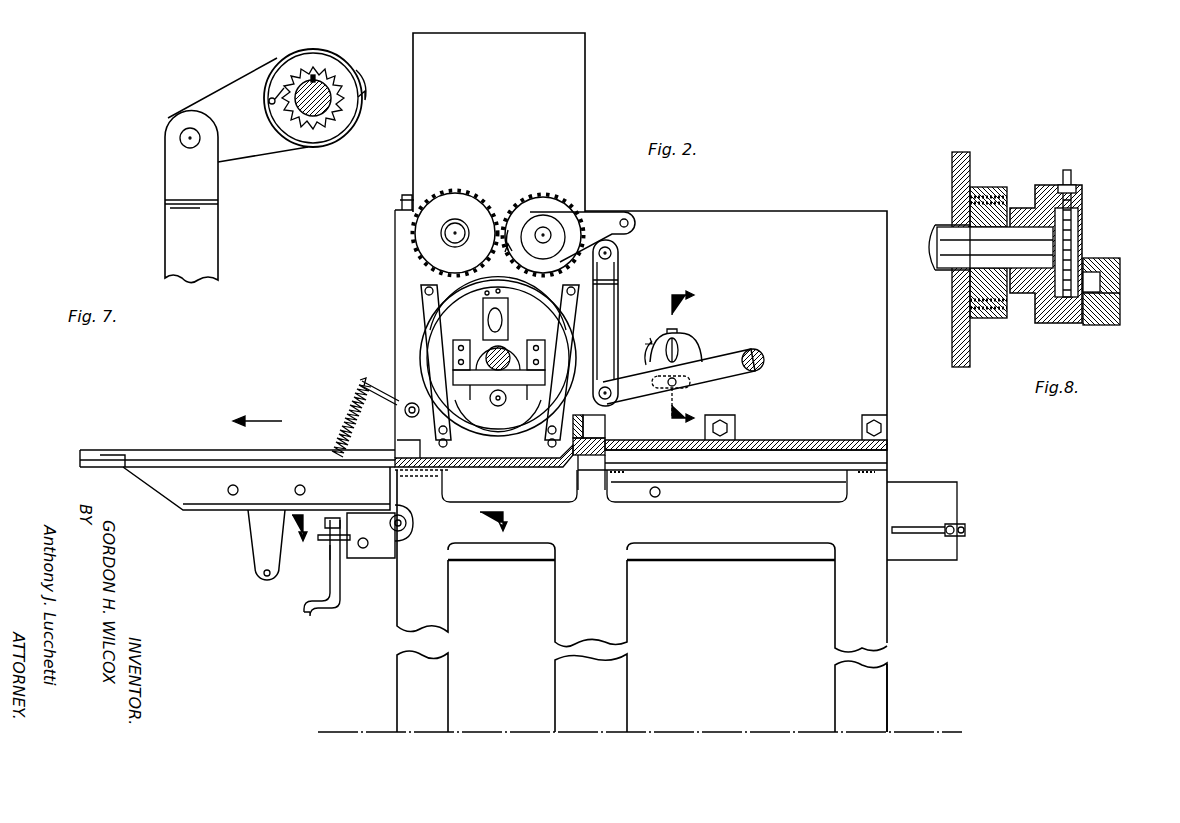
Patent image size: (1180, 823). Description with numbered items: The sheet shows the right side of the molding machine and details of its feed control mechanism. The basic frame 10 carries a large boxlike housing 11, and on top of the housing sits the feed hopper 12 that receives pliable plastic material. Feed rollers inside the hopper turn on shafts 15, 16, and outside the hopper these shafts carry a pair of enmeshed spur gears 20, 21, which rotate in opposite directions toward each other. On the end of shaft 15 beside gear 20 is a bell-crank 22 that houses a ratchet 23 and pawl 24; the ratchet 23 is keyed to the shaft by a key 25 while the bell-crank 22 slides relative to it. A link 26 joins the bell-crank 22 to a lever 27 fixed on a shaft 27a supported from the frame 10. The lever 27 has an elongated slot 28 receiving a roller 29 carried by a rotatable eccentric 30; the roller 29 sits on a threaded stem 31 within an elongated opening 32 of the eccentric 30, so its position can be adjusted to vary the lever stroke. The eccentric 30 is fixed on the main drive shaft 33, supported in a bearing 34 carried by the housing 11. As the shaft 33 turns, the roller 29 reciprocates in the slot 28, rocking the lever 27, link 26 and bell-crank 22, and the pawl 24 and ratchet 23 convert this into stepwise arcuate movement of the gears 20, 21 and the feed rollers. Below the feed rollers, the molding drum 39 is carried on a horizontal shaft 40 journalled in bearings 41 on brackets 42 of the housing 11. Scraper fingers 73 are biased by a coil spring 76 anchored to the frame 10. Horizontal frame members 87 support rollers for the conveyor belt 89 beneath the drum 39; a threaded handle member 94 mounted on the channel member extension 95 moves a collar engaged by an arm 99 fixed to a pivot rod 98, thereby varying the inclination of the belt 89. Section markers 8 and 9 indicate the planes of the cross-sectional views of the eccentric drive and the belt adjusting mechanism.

In FIG. 2, the basic frame 10 is at (880, 602).
In FIG. 2, the boxlike housing 11 is at (818, 216).
In FIG. 8, the boxlike housing 11 is at (952, 170).
In FIG. 2, the feed hopper 12 is at (577, 72).
In FIG. 7, the shaft 15 is at (318, 108).
In FIG. 2, the shaft 15 is at (543, 230).
In FIG. 2, the shaft 16 is at (452, 228).
In FIG. 2, the spur gear 20 is at (515, 202).
In FIG. 2, the spur gear 21 is at (460, 197).
In FIG. 7, the bell-crank 22 is at (228, 97).
In FIG. 2, the bell-crank 22 is at (582, 208).
In FIG. 7, the ratchet 23 is at (330, 80).
In FIG. 7, the pawl 24 is at (272, 97).
In FIG. 7, the key 25 is at (314, 76).
In FIG. 7, the link 26 is at (210, 232).
In FIG. 2, the link 26 is at (610, 300).
In FIG. 2, the lever 27 is at (628, 400).
In FIG. 8, the lever 27 is at (1120, 300).
In FIG. 2, the shaft 27a is at (757, 370).
In FIG. 2, the elongated slot 28 is at (668, 420).
In FIG. 8, the elongated slot 28 is at (1120, 270).
In FIG. 8, the roller 29 is at (1092, 272).
In FIG. 2, the eccentric 30 is at (700, 350).
In FIG. 8, the eccentric 30 is at (1040, 323).
In FIG. 2, the threaded stem 31 is at (660, 333).
In FIG. 8, the threaded stem 31 is at (1080, 205).
In FIG. 8, the elongated opening 32 is at (1078, 235).
In FIG. 8, the main drive shaft 33 is at (925, 230).
In FIG. 8, the bearing 34 is at (990, 187).
In FIG. 2, the molding drum 39 is at (498, 436).
In FIG. 2, the shaft 40 is at (488, 352).
In FIG. 2, the bearings 41 is at (505, 348).
In FIG. 2, the brackets 42 is at (432, 313).
In FIG. 2, the fingers 73 is at (370, 382).
In FIG. 2, the coil spring 76 is at (344, 420).
In FIG. 2, the frame members 87 is at (748, 548).
In FIG. 2, the conveyor belt 89 is at (250, 528).
In FIG. 2, the threaded handle member 94 is at (300, 610).
In FIG. 2, the channel member extension 95 is at (178, 492).
In FIG. 2, the pivot rod 98 is at (406, 520).
In FIG. 2, the arm 99 is at (378, 560).
In FIG. 2, the section line 8- 8 is at (690, 357).
In FIG. 2, the section line 9- 9 is at (403, 533).